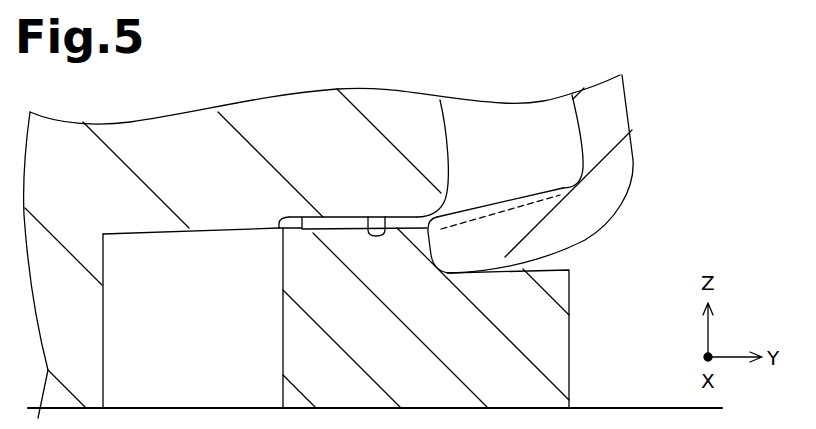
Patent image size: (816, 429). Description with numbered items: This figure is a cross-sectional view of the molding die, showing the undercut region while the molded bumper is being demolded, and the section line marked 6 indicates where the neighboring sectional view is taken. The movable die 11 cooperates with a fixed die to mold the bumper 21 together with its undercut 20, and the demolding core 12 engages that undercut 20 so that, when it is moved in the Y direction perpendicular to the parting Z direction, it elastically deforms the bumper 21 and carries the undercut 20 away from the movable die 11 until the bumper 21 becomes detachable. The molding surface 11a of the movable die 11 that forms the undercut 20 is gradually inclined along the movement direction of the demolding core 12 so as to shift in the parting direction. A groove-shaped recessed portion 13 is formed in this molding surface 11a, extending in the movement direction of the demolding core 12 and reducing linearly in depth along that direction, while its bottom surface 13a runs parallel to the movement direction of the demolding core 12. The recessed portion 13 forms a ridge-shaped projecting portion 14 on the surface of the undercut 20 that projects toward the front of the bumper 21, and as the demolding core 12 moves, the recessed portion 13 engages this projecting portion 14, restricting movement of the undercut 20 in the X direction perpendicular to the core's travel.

The movable die 11 is at (445, 125).
The molding surface 11a is at (142, 236).
The demolding core 12 is at (558, 360).
The recessed portion 13 is at (295, 234).
The bottom surface 13a is at (377, 220).
The projecting portion 14 is at (493, 204).
The undercut 20 is at (537, 243).
The bumper 21 is at (630, 103).
The section line VI-VI 6 is at (358, 195).